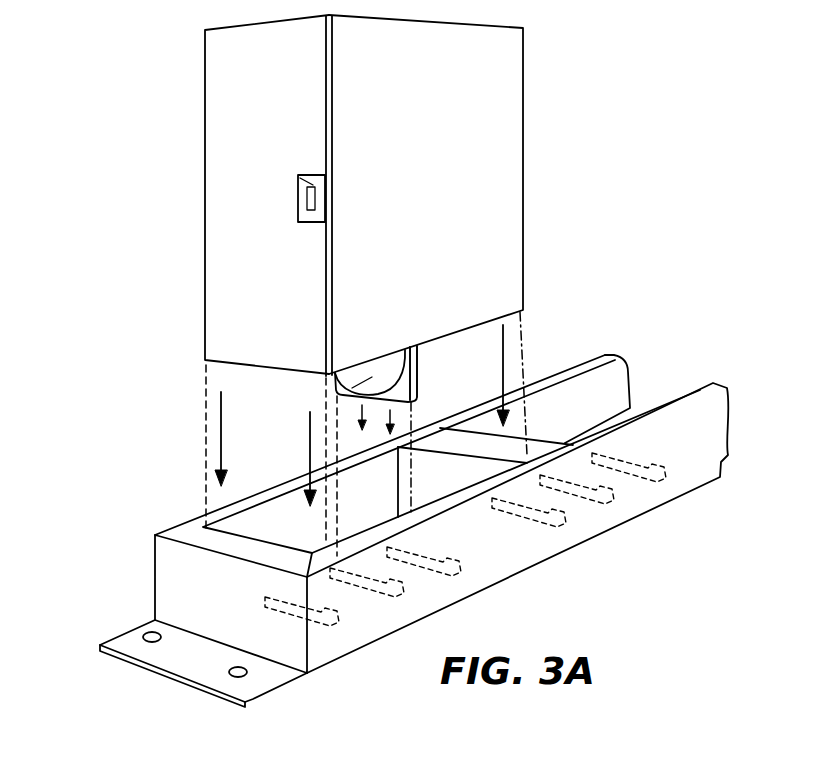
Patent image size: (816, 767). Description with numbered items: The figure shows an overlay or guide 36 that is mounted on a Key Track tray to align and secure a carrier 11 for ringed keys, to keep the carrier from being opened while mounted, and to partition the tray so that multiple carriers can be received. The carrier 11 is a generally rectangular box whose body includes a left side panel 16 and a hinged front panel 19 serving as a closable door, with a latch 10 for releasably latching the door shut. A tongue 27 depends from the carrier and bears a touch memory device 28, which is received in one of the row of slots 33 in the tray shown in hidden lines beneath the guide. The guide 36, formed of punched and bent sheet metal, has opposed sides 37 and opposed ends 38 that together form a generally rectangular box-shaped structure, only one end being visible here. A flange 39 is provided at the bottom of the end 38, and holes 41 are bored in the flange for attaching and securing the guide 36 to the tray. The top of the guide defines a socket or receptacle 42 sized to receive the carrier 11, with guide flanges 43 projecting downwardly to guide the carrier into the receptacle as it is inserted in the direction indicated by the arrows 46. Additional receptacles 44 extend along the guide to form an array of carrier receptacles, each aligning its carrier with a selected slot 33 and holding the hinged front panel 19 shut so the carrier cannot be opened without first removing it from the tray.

The latch 10 is at (297, 174).
The carrier 11 is at (113, 160).
The left side panel 16 is at (230, 118).
The front panel 19 is at (483, 150).
The tongue 27 is at (420, 392).
The touch memory device 28 is at (338, 396).
The slots 33 is at (634, 476).
The guide 36 is at (401, 527).
The sides 37 is at (680, 442).
The ends 38 is at (175, 598).
The flange 39 is at (197, 674).
The holes 41 is at (238, 672).
The receptacle 42 is at (243, 533).
The guide flanges 43 is at (258, 520).
The additional receptacles 44 is at (637, 406).
The arrows 46 is at (220, 418).